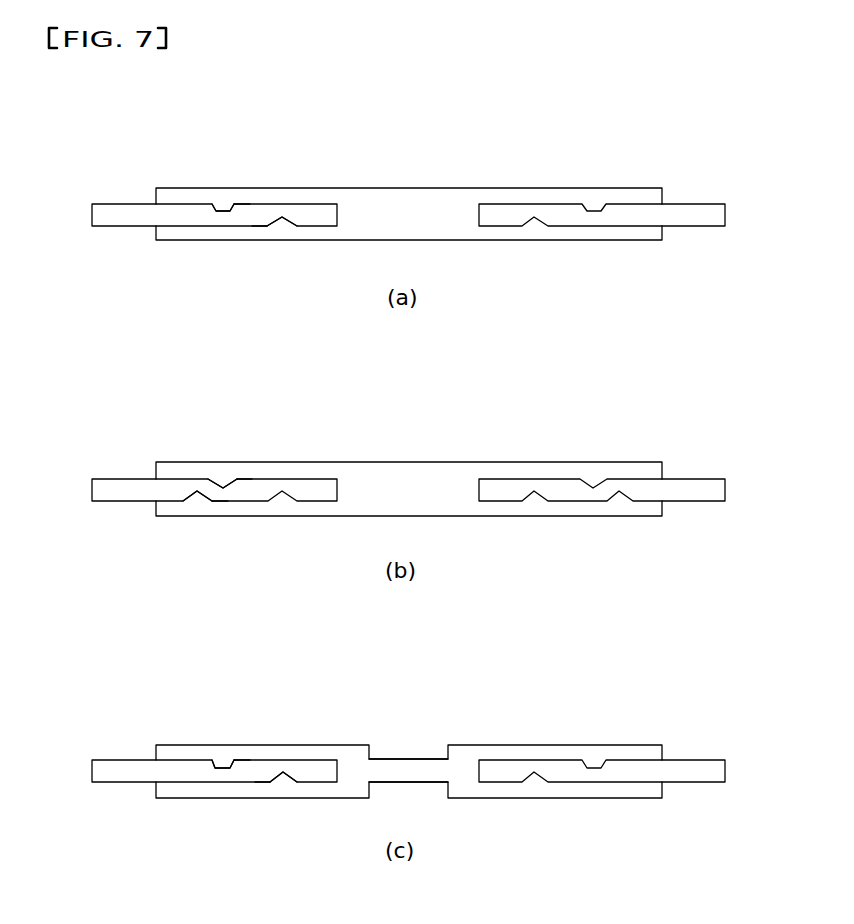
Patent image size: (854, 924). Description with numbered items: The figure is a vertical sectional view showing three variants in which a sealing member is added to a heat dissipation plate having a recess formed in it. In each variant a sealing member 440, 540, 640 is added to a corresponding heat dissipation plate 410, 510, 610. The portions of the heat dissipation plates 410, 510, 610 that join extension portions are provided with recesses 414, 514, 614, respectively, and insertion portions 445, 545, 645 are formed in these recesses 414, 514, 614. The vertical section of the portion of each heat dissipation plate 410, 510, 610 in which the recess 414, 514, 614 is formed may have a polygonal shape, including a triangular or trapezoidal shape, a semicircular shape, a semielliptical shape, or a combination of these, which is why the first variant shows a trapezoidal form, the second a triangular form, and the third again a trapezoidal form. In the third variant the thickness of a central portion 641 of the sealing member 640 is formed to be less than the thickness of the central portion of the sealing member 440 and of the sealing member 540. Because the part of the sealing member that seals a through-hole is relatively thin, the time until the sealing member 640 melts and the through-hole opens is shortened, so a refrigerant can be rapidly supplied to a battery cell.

The heat dissipation plate 410 is at (686, 208).
The recess 414 is at (229, 210).
The sealing member 440 is at (410, 200).
The insertion portion 445 is at (289, 228).
The heat dissipation plate 510 is at (686, 481).
The recess 514 is at (232, 488).
The sealing member 540 is at (410, 473).
The insertion portion 545 is at (222, 483).
The heat dissipation plate 610 is at (686, 765).
The recess 614 is at (230, 766).
The sealing member 640 is at (465, 762).
The central portion 641 is at (408, 755).
The insertion portion 645 is at (220, 765).